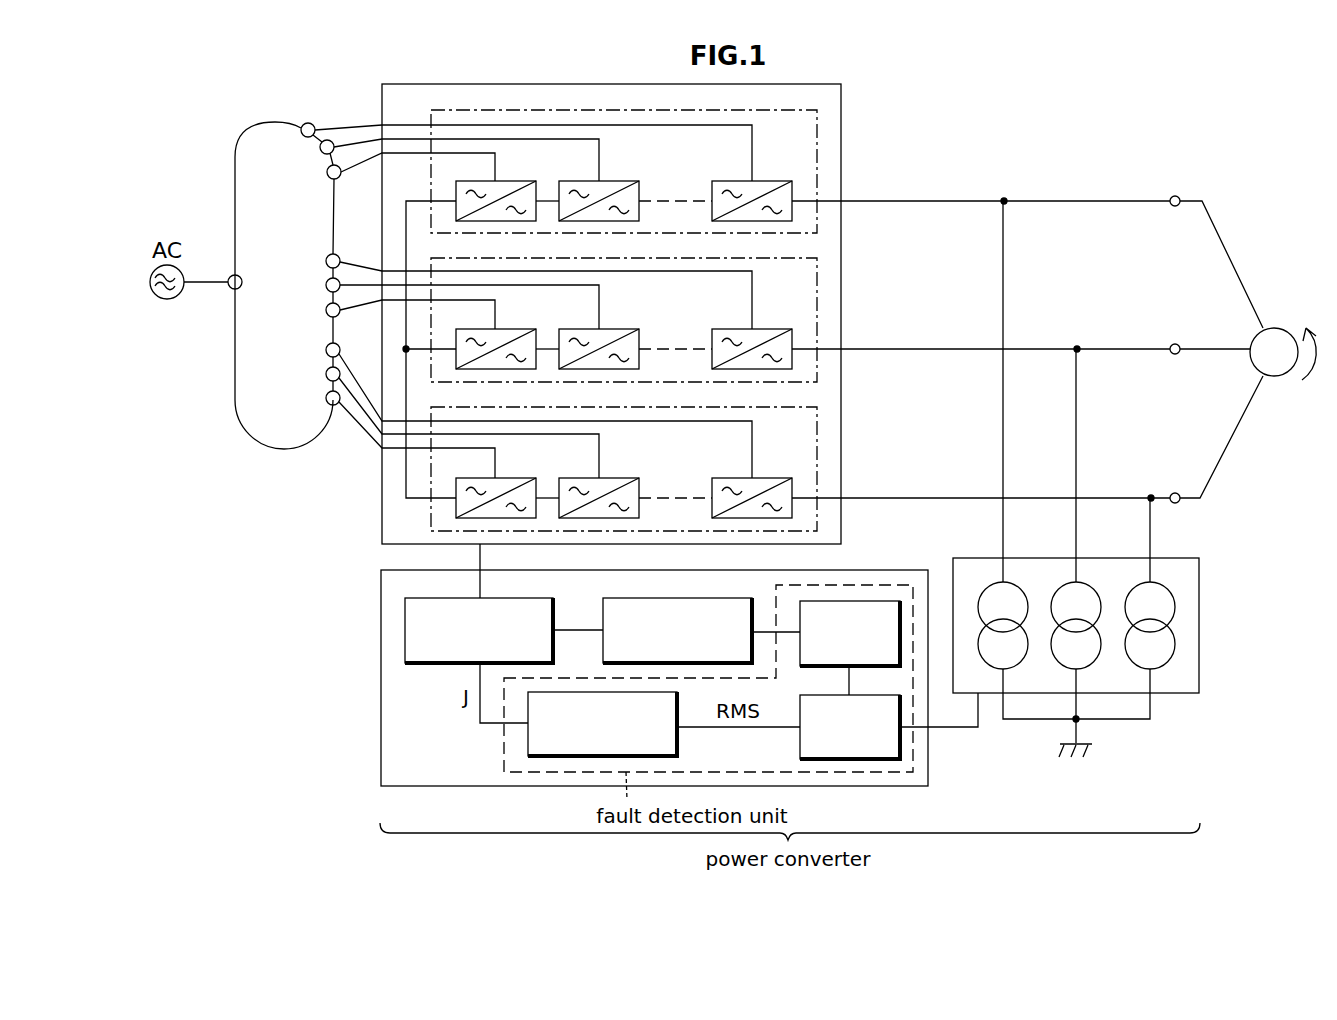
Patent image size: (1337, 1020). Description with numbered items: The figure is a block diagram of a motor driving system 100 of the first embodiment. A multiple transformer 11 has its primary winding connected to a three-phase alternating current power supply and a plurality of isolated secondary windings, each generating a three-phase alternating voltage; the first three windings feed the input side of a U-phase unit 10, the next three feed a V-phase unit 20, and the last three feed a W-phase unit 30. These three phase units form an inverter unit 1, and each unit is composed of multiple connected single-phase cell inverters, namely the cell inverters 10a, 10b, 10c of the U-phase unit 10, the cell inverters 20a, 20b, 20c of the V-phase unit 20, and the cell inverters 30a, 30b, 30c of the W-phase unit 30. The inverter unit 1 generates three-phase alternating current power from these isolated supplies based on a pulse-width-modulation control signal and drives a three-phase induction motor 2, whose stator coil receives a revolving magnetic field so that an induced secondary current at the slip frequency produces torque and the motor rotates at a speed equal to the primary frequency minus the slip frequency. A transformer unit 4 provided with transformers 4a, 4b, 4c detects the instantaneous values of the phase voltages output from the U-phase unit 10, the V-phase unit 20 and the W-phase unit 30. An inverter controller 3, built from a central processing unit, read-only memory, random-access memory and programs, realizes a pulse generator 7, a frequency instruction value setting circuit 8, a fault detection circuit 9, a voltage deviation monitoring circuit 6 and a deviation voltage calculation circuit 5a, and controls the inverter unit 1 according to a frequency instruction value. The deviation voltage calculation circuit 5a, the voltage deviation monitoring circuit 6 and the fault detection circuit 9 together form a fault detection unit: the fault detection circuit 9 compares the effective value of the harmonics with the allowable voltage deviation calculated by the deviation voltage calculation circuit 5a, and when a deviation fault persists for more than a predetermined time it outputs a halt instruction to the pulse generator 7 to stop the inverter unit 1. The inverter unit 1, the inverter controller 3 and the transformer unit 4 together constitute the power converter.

The motor driving system 100 is at (1136, 152).
The inverter unit 1 is at (842, 92).
The three-phase induction motor 2 is at (1276, 328).
The inverter controller 3 is at (381, 640).
The transformer unit 4 is at (1172, 695).
The transformer 4a is at (1014, 583).
The transformer 4b is at (1087, 583).
The transformer 4c is at (1161, 583).
The deviation voltage calculation circuit 5a is at (878, 601).
The voltage deviation monitoring circuit 6 is at (800, 740).
The PWM pulse generator 7 is at (428, 664).
The frequency instruction value setting circuit 8 is at (603, 612).
The fault detection circuit 9 is at (528, 740).
The U-phase unit 10 is at (817, 157).
The single-phase cell inverter 10a is at (506, 181).
The single-phase cell inverter 10b is at (609, 181).
The single-phase cell inverter 10c is at (764, 181).
The V-phase unit 20 is at (817, 283).
The single-phase cell inverter 20a is at (506, 329).
The single-phase cell inverter 20b is at (609, 329).
The single-phase cell inverter 20c is at (764, 329).
The W-phase unit 30 is at (817, 432).
The single-phase cell inverter 30a is at (506, 478).
The single-phase cell inverter 30b is at (609, 478).
The single-phase cell inverter 30c is at (764, 478).
The multiple transformer 11 is at (236, 143).